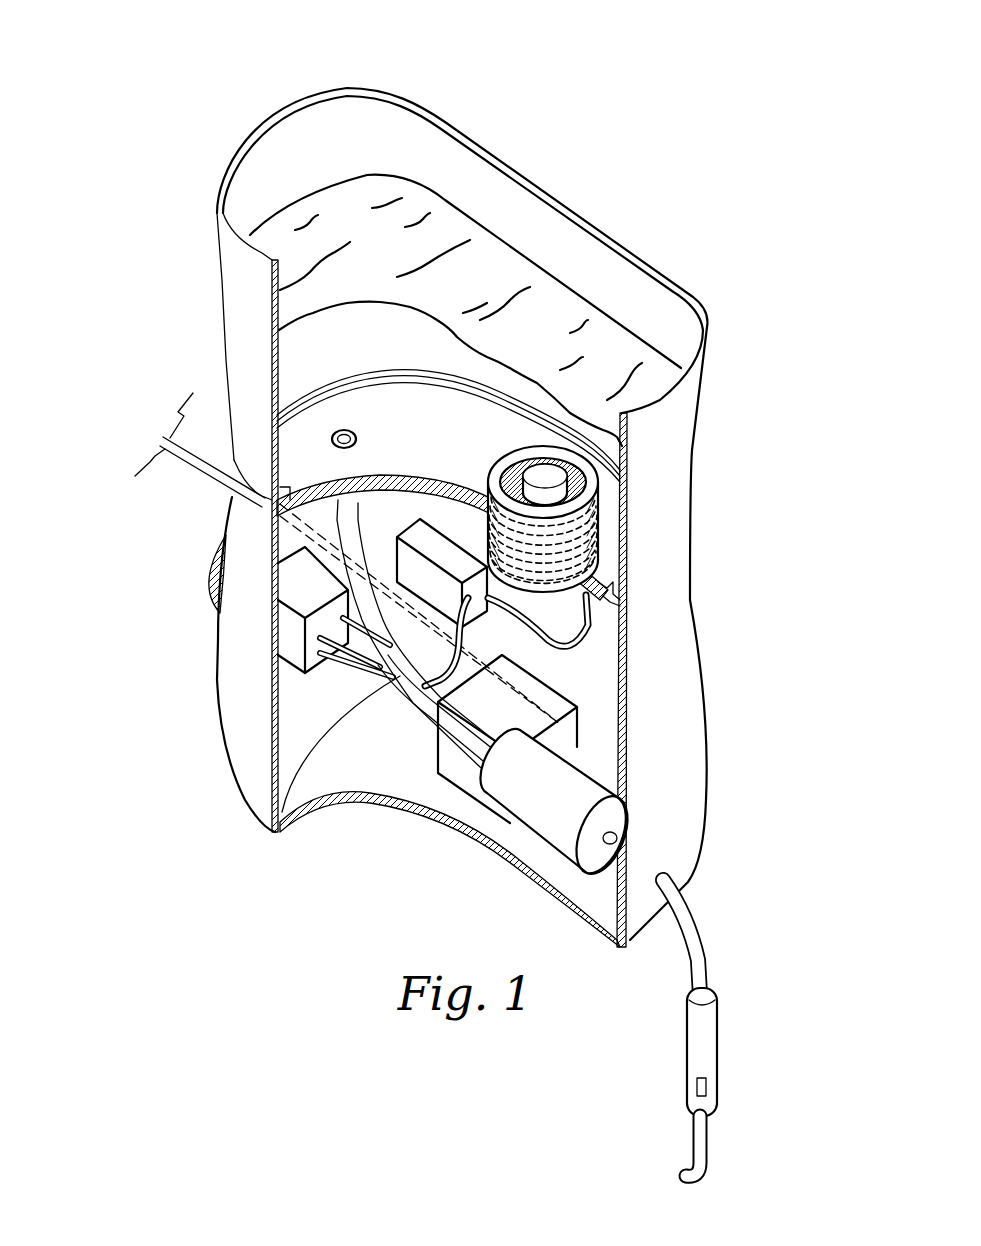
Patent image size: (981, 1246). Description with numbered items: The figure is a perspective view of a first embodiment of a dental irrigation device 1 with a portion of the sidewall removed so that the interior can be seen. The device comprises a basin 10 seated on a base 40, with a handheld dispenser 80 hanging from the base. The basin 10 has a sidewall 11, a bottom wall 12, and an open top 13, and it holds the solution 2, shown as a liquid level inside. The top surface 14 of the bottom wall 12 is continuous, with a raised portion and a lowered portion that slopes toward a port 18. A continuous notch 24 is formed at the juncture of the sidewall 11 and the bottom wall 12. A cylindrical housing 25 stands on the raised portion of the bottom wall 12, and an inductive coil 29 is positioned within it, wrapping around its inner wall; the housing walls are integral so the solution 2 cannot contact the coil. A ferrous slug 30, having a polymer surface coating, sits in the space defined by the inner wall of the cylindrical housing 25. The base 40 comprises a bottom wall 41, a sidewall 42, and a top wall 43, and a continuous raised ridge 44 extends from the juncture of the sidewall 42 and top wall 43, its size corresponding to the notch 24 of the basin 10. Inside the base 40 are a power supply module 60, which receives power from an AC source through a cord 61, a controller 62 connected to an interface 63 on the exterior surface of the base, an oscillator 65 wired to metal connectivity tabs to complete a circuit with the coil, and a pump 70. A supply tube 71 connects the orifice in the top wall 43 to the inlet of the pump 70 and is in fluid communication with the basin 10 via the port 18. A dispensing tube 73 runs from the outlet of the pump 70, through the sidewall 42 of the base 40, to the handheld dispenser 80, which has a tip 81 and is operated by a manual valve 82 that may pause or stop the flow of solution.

The dental irrigation device 1 is at (630, 132).
The solution 2 is at (417, 217).
The basin 10 is at (674, 276).
The sidewall 11 is at (702, 356).
The bottom wall 12 is at (392, 398).
The open top 13 is at (500, 106).
The top surface 14 is at (407, 447).
The port 18 is at (340, 434).
The continuous notch 24 is at (615, 590).
The cylindrical housing 25 is at (595, 490).
The inductive coil 29 is at (593, 526).
The ferrous slug 30 is at (636, 488).
The base 40 is at (703, 700).
The bottom wall 41 is at (373, 762).
The sidewall 42 is at (703, 750).
The top wall 43 is at (263, 503).
The continuous raised ridge 44 is at (624, 604).
The power supply module 60 is at (452, 770).
The cord 61 is at (173, 437).
The controller 62 is at (293, 640).
The interface 63 is at (212, 568).
The oscillator 65 is at (483, 592).
The pump 70 is at (558, 840).
The supply tube 71 is at (392, 667).
The dispensing tube 73 is at (704, 925).
The handheld dispenser 80 is at (717, 1040).
The tip 81 is at (707, 1153).
The manual valve 82 is at (706, 1086).